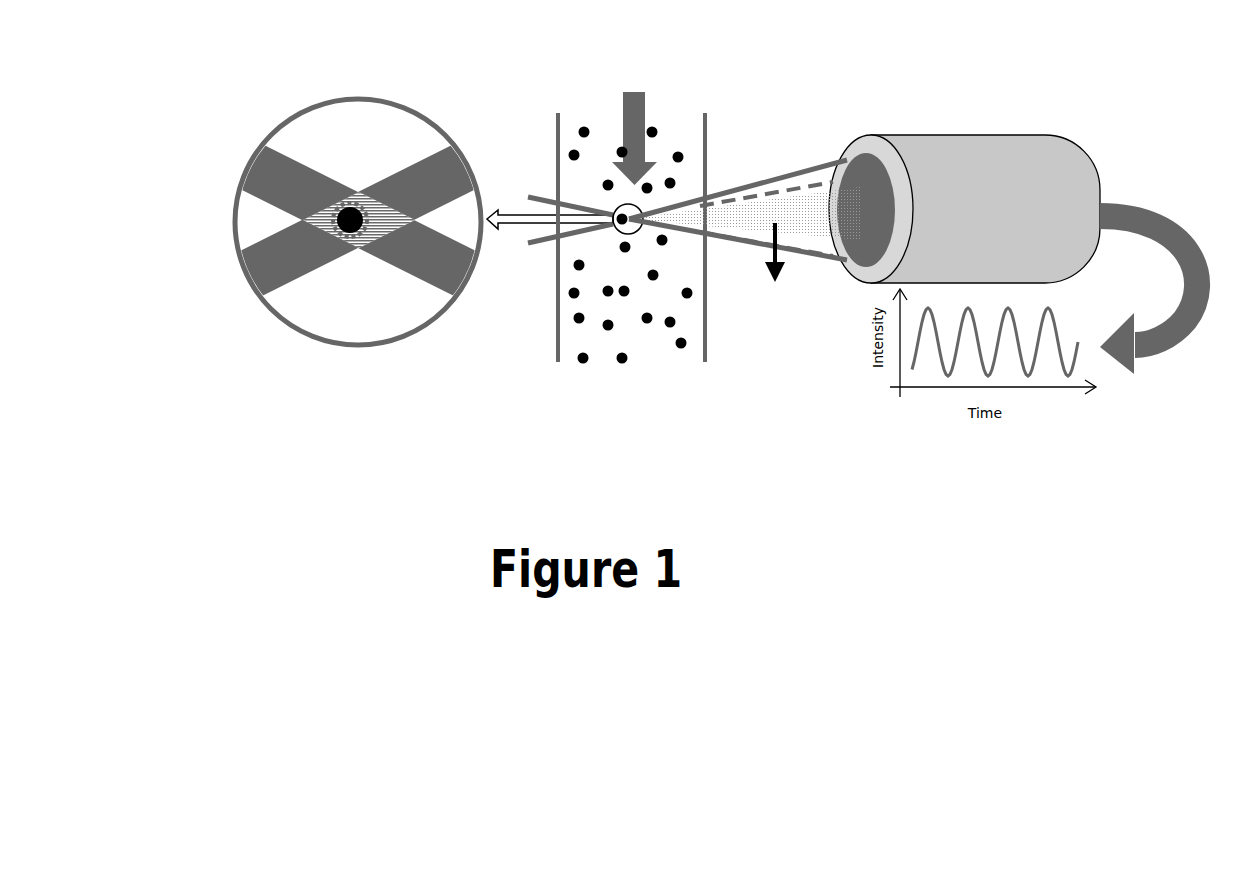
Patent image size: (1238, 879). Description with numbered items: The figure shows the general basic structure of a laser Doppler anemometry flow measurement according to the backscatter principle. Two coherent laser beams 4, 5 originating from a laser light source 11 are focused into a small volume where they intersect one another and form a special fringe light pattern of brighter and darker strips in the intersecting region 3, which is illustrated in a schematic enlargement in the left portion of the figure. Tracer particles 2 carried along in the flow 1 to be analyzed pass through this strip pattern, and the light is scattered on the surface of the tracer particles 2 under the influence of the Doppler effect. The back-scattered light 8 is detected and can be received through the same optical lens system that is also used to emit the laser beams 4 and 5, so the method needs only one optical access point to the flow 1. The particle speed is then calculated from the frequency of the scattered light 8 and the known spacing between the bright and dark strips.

The flow 1 is at (580, 182).
The tracer particles 2 is at (348, 217).
The intersecting region 3 is at (385, 213).
The laser beam 4 is at (715, 192).
The laser beam 5 is at (743, 238).
The scattered light 8 is at (775, 271).
The laser light source 11 is at (964, 209).